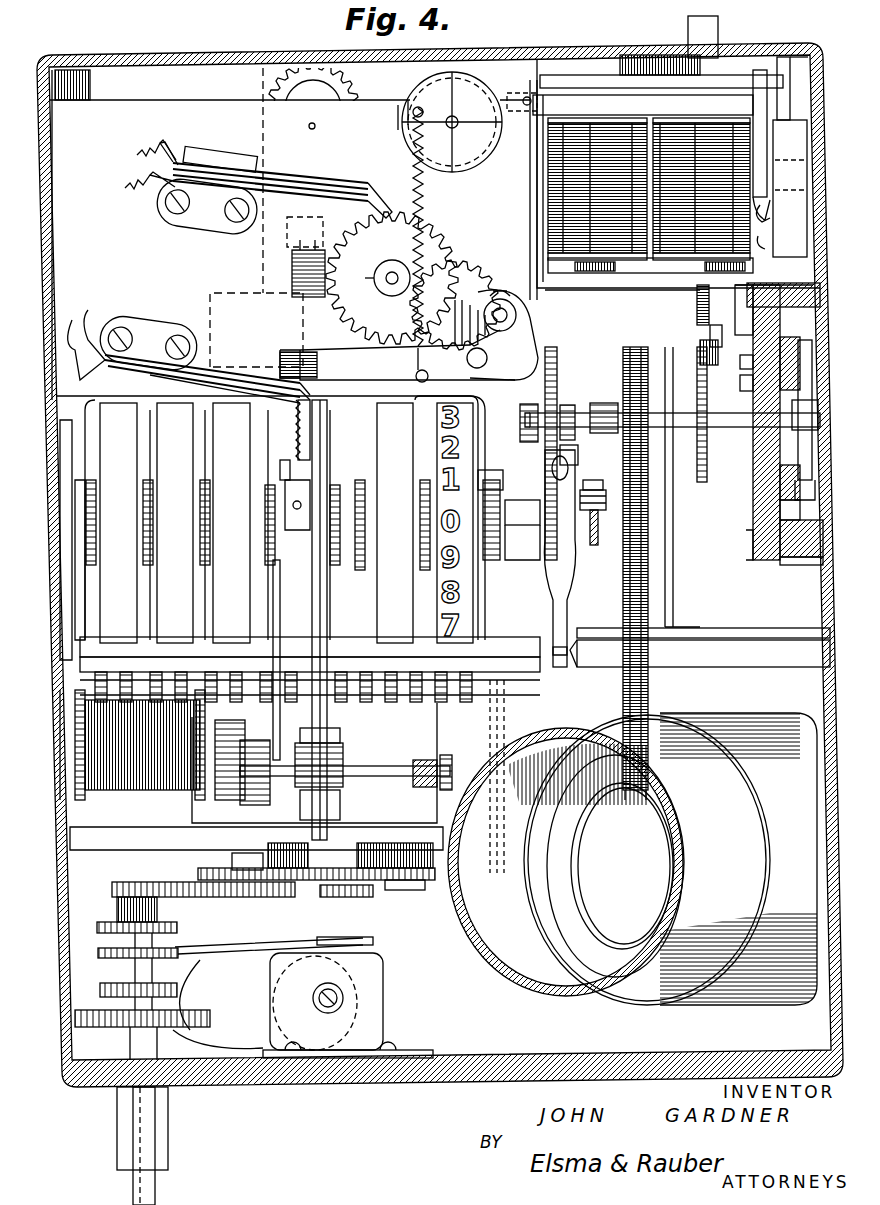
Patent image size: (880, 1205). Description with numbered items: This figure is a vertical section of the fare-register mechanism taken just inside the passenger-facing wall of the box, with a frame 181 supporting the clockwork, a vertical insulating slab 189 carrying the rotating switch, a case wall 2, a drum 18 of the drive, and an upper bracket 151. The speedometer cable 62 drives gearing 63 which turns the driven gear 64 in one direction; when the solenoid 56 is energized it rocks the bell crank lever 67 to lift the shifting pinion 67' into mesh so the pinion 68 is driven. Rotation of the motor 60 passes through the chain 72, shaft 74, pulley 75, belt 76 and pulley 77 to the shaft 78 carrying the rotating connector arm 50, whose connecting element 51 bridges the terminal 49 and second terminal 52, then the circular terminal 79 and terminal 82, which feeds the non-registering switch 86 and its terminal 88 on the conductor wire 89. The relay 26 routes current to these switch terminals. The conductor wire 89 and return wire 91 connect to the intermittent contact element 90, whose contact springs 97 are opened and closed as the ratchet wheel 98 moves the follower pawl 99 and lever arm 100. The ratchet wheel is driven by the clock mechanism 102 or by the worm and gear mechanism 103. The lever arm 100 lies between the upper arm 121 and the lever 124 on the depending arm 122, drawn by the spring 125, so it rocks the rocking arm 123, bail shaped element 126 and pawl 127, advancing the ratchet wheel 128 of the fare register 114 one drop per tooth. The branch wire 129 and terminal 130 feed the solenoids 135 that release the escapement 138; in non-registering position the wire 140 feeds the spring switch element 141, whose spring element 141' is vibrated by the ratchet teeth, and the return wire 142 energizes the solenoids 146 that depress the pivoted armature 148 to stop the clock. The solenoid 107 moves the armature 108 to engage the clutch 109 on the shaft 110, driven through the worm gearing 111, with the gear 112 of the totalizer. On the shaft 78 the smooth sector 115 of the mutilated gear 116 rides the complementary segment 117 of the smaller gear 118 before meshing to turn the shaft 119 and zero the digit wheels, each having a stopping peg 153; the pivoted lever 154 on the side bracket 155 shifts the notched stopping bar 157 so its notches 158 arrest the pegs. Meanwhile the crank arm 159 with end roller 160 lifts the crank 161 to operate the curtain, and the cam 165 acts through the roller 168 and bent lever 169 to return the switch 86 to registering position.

The counter frame 2 is at (752, 360).
The drum 18 is at (672, 859).
The relay 26 is at (210, 293).
The terminal 49 is at (755, 459).
The rotating connector arm 50 is at (815, 432).
The connecting element 51 is at (815, 350).
The second terminal 52 is at (755, 481).
The solenoid 56 is at (268, 1050).
The motor 60 is at (460, 420).
The speedometer cable 62 is at (160, 1185).
The gearing 63 is at (160, 912).
The driven gear 64 is at (315, 880).
The bell crank lever 67 is at (290, 979).
The shifting pinion 67' is at (346, 906).
The pinion 68 is at (405, 878).
The chain 72 is at (500, 540).
The shaft 74 is at (605, 800).
The pulley 75 is at (680, 805).
The belt 76 is at (648, 532).
The pulley 77 is at (658, 447).
The shaft 78 is at (538, 412).
The circular terminal 79 is at (753, 383).
The terminal 82 is at (755, 340).
The non-registering switch 86 is at (718, 30).
The terminal 88 is at (648, 70).
The conductor wire 89 is at (90, 320).
The intermittent contact element 90 is at (245, 385).
The return wire 91 is at (81, 345).
The contact springs 97 is at (260, 390).
The ratchet wheel 98 is at (392, 278).
The follower pawl 99 is at (410, 335).
The lever arm 100 is at (515, 300).
The clock mechanism 102 is at (128, 143).
The worm and gear mechanism 103 is at (290, 272).
The solenoid 107 is at (118, 785).
The armature 108 is at (278, 720).
The clutch 109 is at (268, 762).
The shaft 110 is at (365, 770).
The worm gearing 111 is at (345, 770).
The gear 112 is at (200, 790).
The fare register 114 is at (395, 521).
The smooth sector 115 is at (592, 403).
The mutilated gear 116 is at (552, 355).
The complementary segment 117 is at (558, 440).
The smaller gear 118 is at (560, 460).
The shaft 119 is at (495, 485).
The upper arm 121 is at (348, 358).
The depending arm 122 is at (312, 470).
The rocking arm 123 is at (295, 530).
The lever 124 is at (310, 422).
The spring 125 is at (300, 448).
The bail shaped element 126 is at (172, 521).
The pawl 127 is at (262, 450).
The ratchet wheel 128 is at (268, 490).
The branch wire 129 is at (768, 243).
The terminal 130 is at (768, 215).
The solenoids 135 is at (552, 208).
The escapement 138 is at (470, 80).
The wire 140 is at (137, 155).
The spring switch element 141 is at (261, 178).
The spring element 141' is at (388, 192).
The return wire 142 is at (125, 188).
The solenoids 146 is at (575, 282).
The pivoted armature 148 is at (532, 148).
The magnet frame 151 is at (787, 55).
The stopping peg 153 is at (235, 652).
The pivoted lever 154 is at (570, 598).
The side bracket 155 is at (505, 556).
The notched stopping bar 157 is at (558, 666).
The notches 158 is at (230, 655).
The crank arm 159 is at (594, 480).
The end roller 160 is at (595, 490).
The crank 161 is at (596, 545).
The cam 165 is at (702, 482).
The roller 168 is at (708, 350).
The bent lever 169 is at (700, 309).
The frame 181 is at (213, 110).
The insulating slab 189 is at (755, 515).